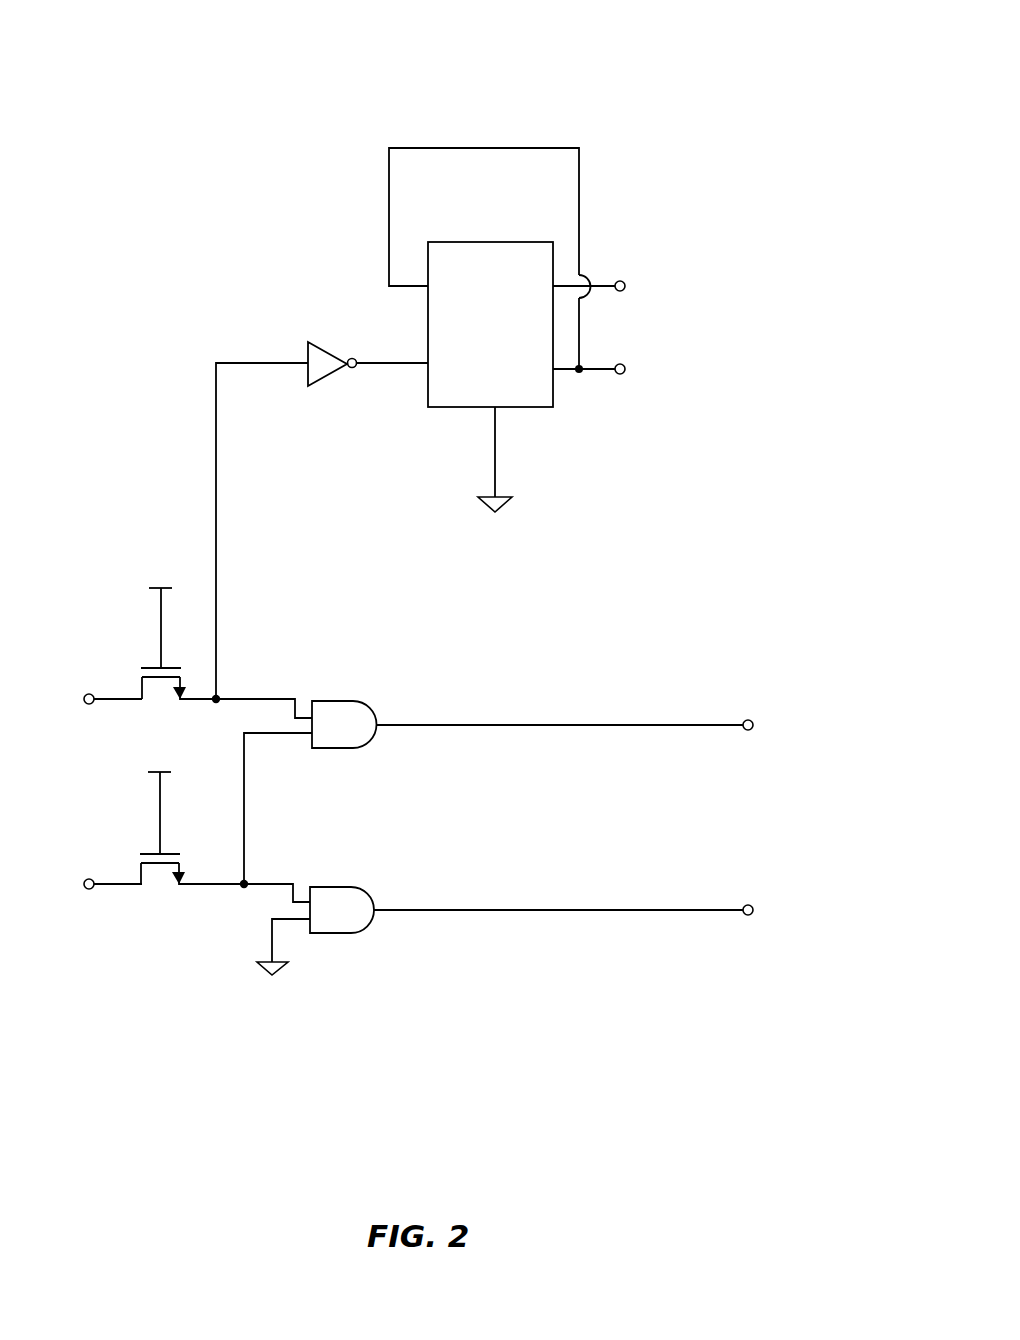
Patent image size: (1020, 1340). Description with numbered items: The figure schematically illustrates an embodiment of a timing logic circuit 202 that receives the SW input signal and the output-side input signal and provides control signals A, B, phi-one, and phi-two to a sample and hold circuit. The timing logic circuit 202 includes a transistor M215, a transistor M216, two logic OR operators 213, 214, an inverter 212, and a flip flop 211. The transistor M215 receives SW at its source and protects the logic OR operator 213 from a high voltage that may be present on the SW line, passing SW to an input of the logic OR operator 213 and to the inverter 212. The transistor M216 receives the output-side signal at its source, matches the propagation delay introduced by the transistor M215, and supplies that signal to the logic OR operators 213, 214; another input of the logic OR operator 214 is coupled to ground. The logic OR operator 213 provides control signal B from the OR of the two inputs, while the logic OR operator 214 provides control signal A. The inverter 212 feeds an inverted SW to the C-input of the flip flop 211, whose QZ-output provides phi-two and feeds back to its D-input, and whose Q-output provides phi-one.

The timing logic circuit 202 is at (688, 65).
The flip flop 211 is at (495, 241).
The inverter 212 is at (308, 350).
The logic OR operator 213 is at (350, 701).
The logic OR operator 214 is at (348, 887).
The transistor M215 is at (141, 685).
The transistor M216 is at (138, 868).